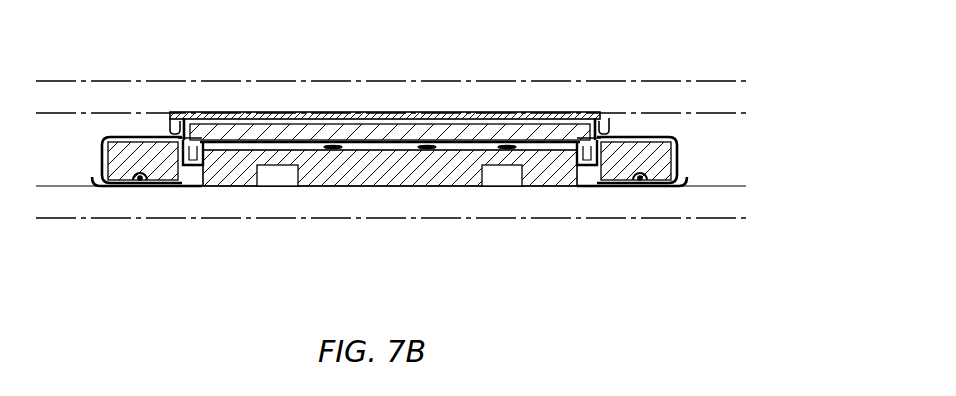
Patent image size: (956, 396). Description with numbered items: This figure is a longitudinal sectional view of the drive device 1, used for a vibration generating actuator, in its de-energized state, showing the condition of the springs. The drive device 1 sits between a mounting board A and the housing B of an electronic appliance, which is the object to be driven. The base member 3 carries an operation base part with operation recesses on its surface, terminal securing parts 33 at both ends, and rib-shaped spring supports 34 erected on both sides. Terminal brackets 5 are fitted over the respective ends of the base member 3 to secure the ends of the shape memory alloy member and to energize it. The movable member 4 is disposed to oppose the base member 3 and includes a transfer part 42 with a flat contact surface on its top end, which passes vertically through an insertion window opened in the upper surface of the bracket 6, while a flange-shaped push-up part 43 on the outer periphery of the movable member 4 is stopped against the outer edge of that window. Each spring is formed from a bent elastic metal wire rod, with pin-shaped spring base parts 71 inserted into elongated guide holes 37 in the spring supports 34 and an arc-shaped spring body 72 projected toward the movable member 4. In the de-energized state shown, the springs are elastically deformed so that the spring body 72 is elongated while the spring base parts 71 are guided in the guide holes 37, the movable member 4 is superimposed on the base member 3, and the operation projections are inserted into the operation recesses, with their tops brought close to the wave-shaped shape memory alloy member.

The drive device 1 is at (278, 105).
The base member 3 is at (418, 180).
The movable member 4 is at (377, 111).
The terminal bracket 5 is at (112, 137).
The bracket 6 is at (602, 108).
The terminal securing part 33 is at (133, 145).
The spring support 34 is at (427, 160).
The guide hole 37 is at (197, 172).
The transfer part 42 is at (474, 114).
The push-up part 43 is at (215, 121).
The spring base part 71 is at (173, 188).
The spring body 72 is at (337, 124).
The mounting board A is at (62, 212).
The housing B is at (715, 95).